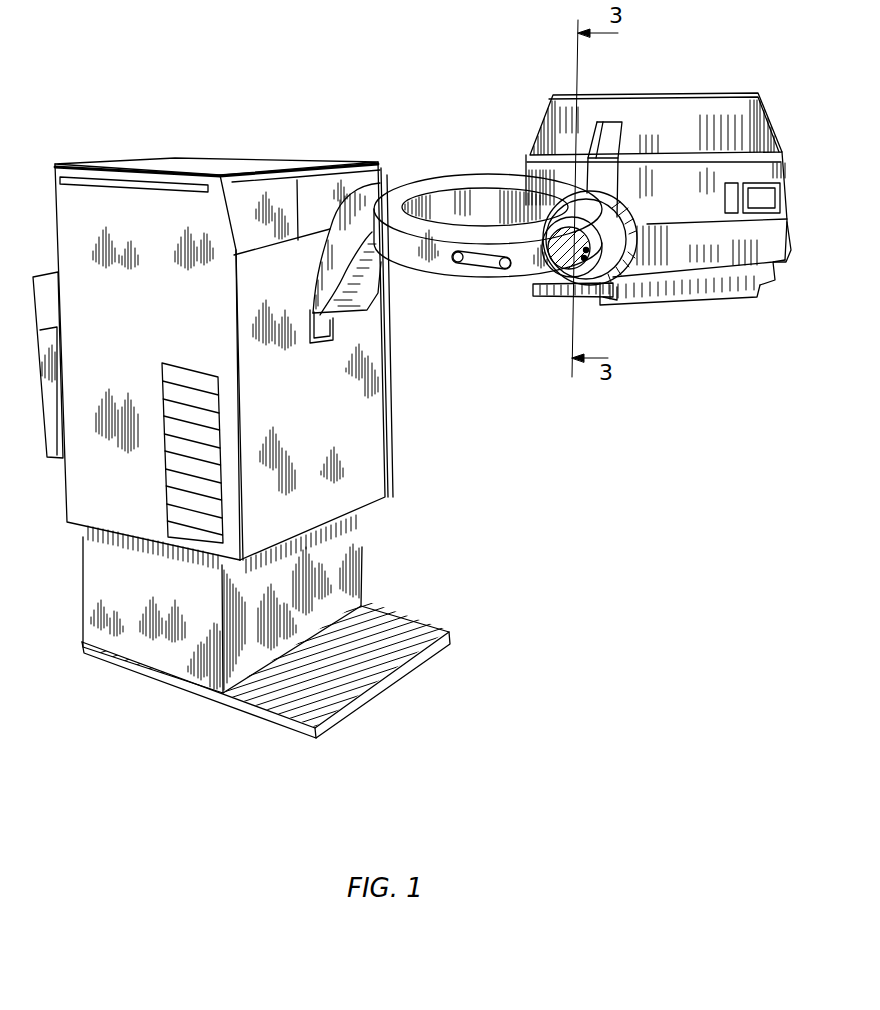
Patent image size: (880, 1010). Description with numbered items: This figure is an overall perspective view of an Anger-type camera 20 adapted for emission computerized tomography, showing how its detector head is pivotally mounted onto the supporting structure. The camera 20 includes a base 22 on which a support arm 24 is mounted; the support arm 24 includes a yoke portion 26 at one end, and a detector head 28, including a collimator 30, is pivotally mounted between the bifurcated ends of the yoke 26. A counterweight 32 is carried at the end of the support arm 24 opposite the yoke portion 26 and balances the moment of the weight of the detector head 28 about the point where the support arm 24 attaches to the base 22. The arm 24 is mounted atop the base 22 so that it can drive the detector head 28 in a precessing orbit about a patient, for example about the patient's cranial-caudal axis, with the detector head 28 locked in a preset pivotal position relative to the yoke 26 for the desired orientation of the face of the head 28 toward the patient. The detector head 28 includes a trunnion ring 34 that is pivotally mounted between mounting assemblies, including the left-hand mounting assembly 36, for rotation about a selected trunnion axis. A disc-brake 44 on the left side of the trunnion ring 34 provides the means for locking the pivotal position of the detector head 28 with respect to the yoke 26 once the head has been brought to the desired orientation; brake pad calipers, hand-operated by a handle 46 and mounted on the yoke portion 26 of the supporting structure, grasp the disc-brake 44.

The Anger-type camera 20 is at (224, 137).
The base 22 is at (366, 555).
The support arm 24 is at (364, 278).
The yoke portion 26 is at (518, 278).
The detector head 28 is at (538, 130).
The collimator 30 is at (727, 300).
The counterweight 32 is at (47, 277).
The trunnion ring 34 is at (783, 257).
The left-hand mounting assembly 36 is at (630, 237).
The disc-brake 44 is at (613, 278).
The handle 46 is at (486, 270).